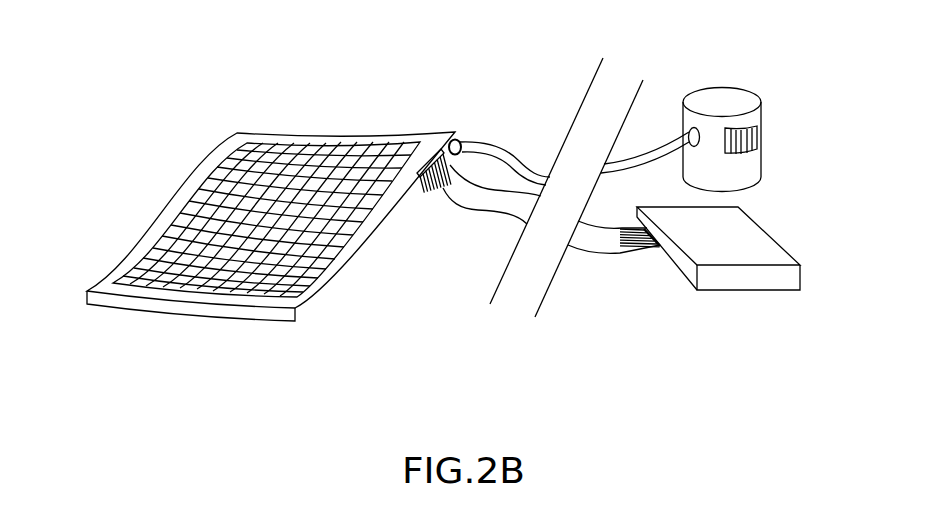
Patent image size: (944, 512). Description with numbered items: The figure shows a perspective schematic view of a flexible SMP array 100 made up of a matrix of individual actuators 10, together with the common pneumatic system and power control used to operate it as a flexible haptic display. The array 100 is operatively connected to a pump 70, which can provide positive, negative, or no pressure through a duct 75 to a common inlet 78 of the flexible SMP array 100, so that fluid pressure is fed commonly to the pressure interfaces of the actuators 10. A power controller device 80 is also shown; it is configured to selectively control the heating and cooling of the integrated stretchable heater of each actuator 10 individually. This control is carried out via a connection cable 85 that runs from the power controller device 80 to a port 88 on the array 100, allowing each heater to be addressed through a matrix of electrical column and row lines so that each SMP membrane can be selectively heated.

The flexible SMP array 100 is at (218, 135).
The actuator 10 is at (258, 288).
The port 88 is at (427, 193).
The common inlet 78 is at (458, 139).
The duct 75 is at (514, 155).
The connection cable 85 is at (486, 205).
The pump 70 is at (733, 100).
The power controller device 80 is at (761, 249).